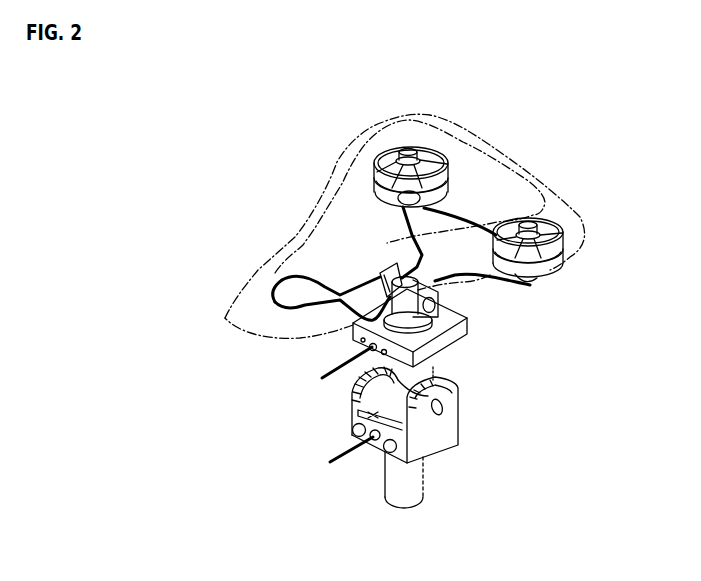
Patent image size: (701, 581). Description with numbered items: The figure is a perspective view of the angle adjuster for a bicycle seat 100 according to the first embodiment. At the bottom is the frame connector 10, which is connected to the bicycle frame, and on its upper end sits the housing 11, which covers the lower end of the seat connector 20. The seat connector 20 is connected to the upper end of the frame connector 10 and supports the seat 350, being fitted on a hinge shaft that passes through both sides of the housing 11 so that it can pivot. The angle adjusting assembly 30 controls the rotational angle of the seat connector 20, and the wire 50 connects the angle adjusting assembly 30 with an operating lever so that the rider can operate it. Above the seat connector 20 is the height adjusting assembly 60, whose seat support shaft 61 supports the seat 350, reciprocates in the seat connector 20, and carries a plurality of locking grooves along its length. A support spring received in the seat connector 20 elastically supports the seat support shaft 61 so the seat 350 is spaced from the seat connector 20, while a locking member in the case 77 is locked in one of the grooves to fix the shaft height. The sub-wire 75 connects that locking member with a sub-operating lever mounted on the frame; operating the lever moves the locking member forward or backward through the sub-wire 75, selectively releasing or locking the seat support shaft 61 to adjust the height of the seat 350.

The seat 350 is at (480, 163).
The angle adjuster for a bicycle seat 100 is at (573, 316).
The seat support shaft 61 is at (387, 243).
The height adjusting assembly 60 is at (442, 329).
The case 77 is at (468, 330).
The seat connector 20 is at (437, 366).
The sub-wire 75 is at (330, 366).
The angle adjusting assembly 30 is at (347, 402).
The housing 11 is at (443, 423).
The wire 50 is at (345, 458).
The frame connector 10 is at (420, 485).